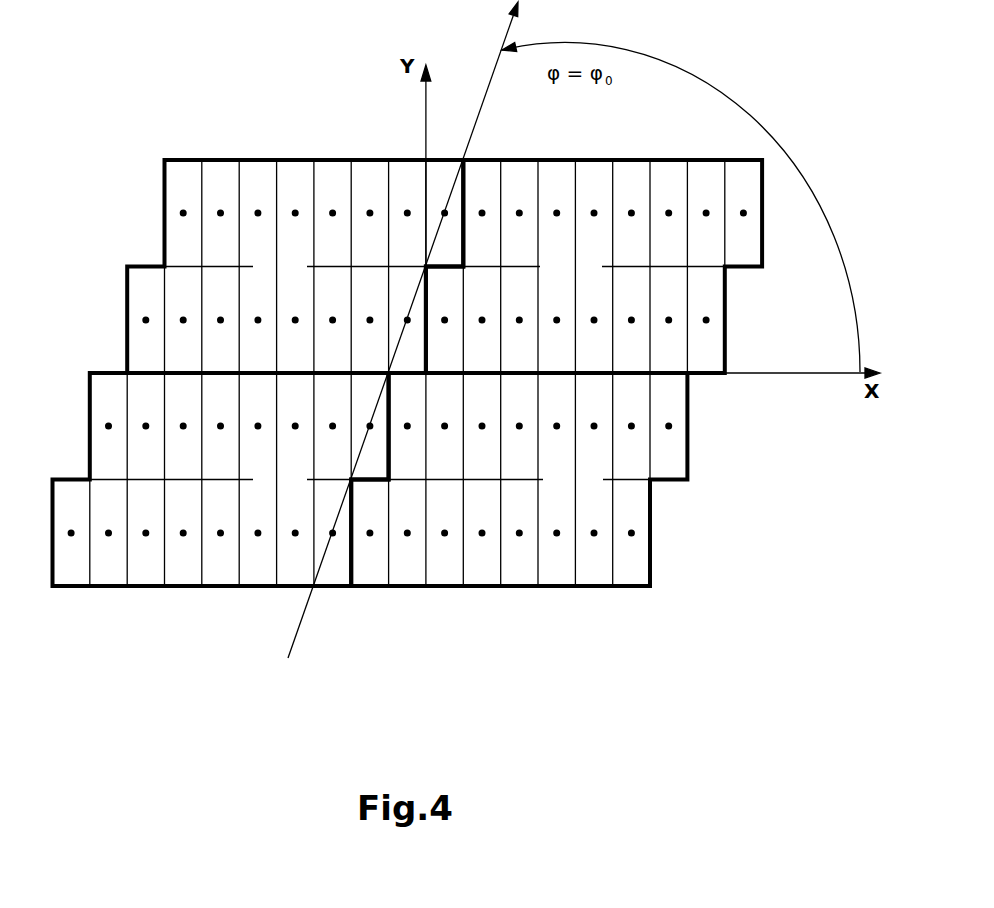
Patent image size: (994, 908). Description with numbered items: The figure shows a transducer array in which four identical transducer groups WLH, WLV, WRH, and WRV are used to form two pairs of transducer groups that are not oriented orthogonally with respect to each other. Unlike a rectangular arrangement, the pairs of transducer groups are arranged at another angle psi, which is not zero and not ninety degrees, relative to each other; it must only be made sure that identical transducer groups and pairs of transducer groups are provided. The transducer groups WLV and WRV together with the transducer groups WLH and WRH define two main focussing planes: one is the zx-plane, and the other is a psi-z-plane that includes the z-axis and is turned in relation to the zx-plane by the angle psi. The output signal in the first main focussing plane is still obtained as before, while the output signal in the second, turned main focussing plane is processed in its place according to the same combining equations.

The transducer group WLV is at (295, 266).
The transducer group WRV is at (594, 266).
The transducer group WLH is at (221, 479).
The transducer group WRH is at (519, 479).